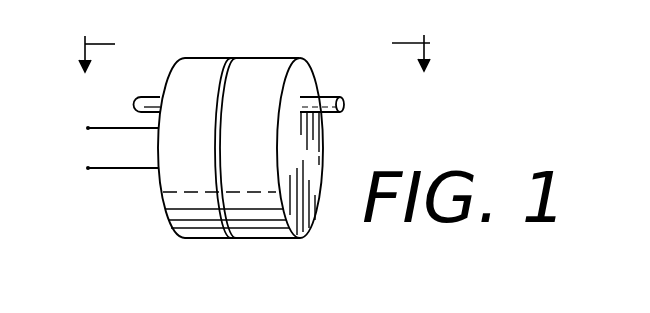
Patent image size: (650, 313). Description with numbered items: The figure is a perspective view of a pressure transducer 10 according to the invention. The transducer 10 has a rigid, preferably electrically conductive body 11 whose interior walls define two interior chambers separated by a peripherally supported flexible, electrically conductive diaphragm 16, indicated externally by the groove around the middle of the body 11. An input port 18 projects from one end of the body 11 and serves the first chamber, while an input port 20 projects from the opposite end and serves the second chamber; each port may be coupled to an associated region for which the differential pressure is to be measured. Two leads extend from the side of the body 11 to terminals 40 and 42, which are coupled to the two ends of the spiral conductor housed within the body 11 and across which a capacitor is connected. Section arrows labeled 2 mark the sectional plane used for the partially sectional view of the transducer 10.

The pressure transducer 10 is at (197, 22).
The body 11 is at (323, 148).
The diaphragm 16 is at (229, 216).
The input port 18 is at (148, 97).
The input port 20 is at (331, 96).
The terminal 40 is at (88, 128).
The terminal 42 is at (88, 168).
The section line for FIG. 2 is at (254, 65).